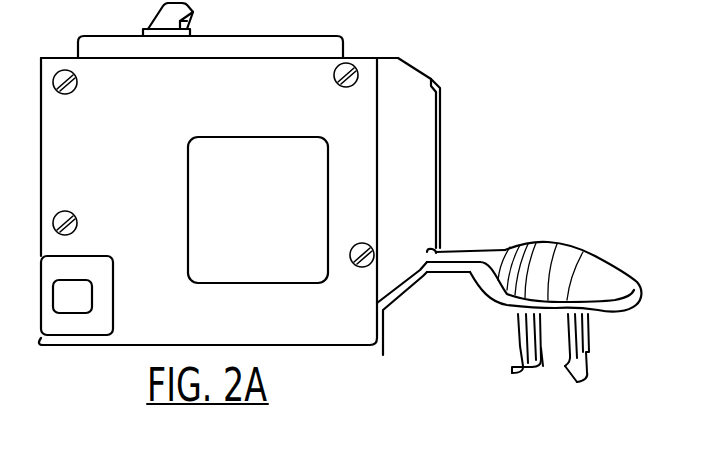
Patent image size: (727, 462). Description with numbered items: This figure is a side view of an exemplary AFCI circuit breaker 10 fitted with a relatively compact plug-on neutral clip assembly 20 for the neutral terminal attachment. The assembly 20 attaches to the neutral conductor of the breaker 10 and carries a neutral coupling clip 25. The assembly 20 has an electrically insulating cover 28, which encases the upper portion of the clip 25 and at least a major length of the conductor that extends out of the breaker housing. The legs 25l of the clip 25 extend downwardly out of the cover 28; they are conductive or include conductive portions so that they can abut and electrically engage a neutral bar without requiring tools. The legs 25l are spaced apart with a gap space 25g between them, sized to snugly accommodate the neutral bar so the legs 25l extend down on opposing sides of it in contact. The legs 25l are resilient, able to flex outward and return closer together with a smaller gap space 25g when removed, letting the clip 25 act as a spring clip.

The AFCI circuit breaker 10 is at (297, 48).
The plug-on neutral clip assembly 20 is at (537, 310).
The electrically insulating cover 28 is at (590, 277).
The neutral coupling clip 25 is at (590, 333).
The legs 25l is at (520, 335).
The gap space 25g is at (543, 368).